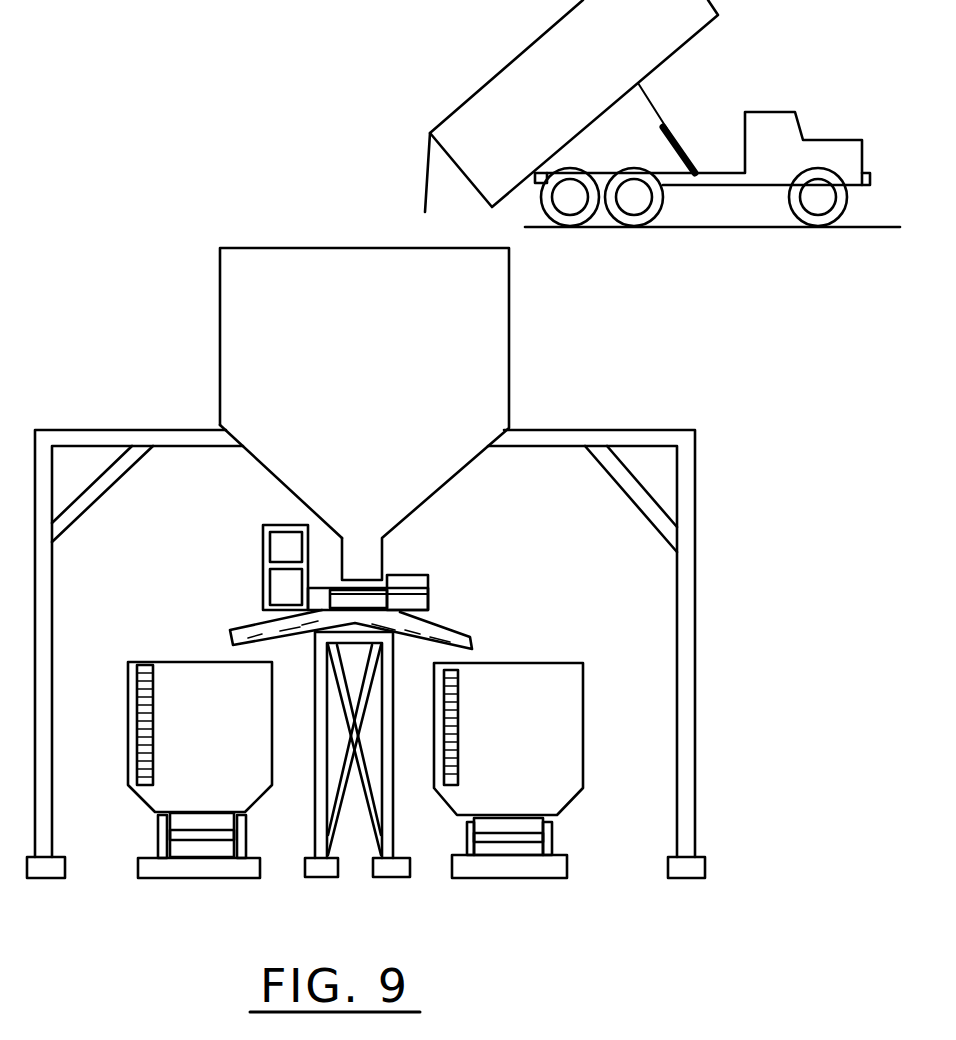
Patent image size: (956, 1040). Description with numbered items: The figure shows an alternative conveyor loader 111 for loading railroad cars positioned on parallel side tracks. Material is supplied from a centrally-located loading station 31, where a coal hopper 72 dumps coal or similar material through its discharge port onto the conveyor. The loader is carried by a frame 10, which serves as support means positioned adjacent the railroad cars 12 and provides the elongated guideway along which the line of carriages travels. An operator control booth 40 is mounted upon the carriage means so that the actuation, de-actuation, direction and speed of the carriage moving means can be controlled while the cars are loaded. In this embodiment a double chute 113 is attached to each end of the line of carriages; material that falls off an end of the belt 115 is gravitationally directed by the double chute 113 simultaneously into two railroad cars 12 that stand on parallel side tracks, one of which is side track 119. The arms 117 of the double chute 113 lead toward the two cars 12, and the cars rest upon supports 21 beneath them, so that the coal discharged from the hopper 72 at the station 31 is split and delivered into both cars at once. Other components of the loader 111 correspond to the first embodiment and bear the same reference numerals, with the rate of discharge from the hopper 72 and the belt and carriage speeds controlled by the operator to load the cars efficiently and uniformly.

The loading station 31 is at (408, 414).
The coal hopper 72 is at (298, 465).
The operator control booth 40 is at (263, 551).
The conveyor loader 111 is at (428, 577).
The belt 115 is at (363, 600).
The double chute 113 is at (345, 625).
The spreader chute arms 117 is at (512, 636).
The frame 10 is at (393, 810).
The railroad car 12 is at (134, 731).
The side track 119 is at (152, 856).
The weighing scale 21 is at (558, 850).